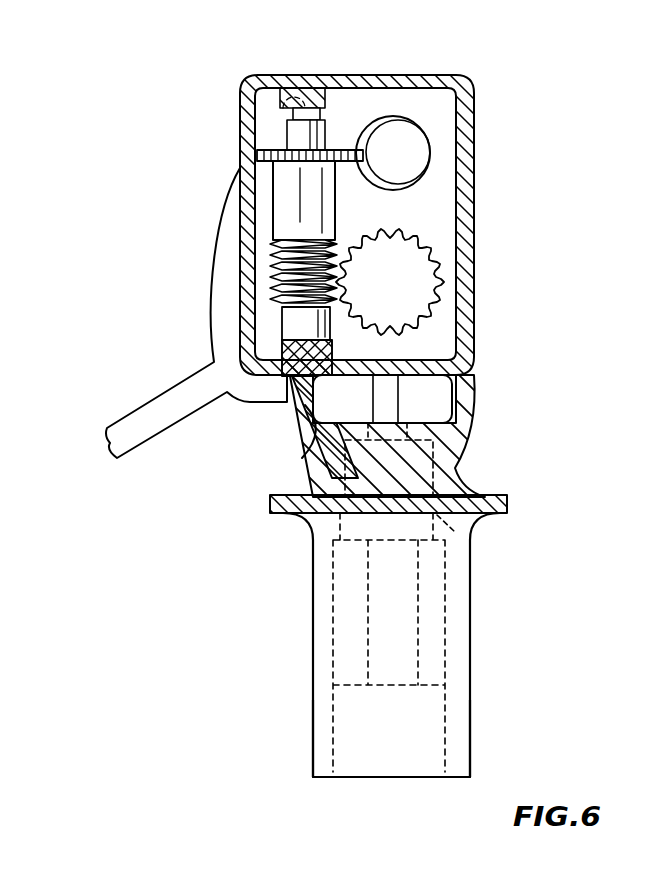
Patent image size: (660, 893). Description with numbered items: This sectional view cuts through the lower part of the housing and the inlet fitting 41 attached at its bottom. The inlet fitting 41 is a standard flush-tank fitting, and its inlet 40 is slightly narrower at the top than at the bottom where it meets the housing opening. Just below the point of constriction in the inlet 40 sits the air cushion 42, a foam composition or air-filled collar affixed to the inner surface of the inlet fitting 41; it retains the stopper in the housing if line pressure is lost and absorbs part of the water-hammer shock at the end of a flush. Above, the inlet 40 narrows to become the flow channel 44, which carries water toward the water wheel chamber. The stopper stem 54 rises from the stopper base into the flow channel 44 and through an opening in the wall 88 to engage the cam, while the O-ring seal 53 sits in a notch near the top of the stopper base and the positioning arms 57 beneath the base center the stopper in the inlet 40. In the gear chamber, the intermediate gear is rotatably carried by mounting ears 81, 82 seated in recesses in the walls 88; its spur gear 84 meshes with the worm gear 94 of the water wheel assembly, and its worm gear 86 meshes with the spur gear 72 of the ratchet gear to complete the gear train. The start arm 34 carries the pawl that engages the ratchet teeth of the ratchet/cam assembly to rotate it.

The mounting ear 81 is at (294, 88).
The spur gear 84 is at (262, 150).
The worm gear 86 is at (277, 263).
The worm gear 94 is at (407, 153).
The spur gear 72 is at (427, 293).
The start arm 34 is at (140, 410).
The mounting ear 82 is at (280, 397).
The wall 88 is at (300, 437).
The stopper stem 54 is at (387, 398).
The flow channel 44 is at (437, 412).
The O-ring seal 53 is at (433, 468).
The positioning arm 57 is at (455, 532).
The air cushion 42 is at (353, 620).
The inlet fitting 41 is at (470, 620).
The inlet 40 is at (400, 742).